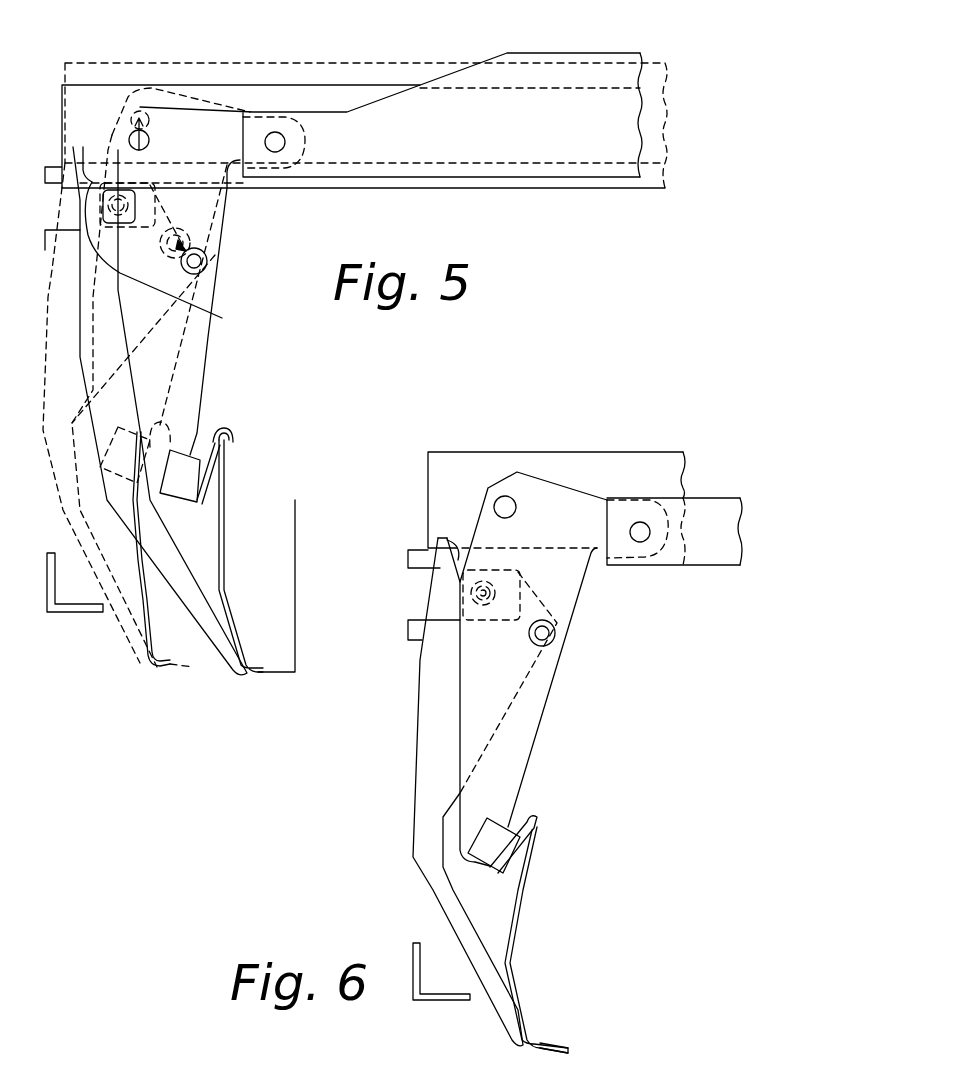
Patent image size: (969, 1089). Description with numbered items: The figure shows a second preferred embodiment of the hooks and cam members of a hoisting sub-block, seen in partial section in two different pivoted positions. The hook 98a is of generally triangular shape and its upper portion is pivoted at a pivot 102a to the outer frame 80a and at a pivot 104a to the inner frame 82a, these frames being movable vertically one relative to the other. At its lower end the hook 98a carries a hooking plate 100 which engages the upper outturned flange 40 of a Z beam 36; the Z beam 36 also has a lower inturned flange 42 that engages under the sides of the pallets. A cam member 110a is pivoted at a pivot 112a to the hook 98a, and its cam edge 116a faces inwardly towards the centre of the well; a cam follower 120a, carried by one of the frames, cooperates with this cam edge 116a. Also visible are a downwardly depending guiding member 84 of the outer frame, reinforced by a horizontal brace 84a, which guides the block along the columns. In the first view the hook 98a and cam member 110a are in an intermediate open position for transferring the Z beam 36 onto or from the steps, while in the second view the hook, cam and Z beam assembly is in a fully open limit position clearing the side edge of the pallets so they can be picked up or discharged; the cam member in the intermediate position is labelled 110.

In FIG. 5, the Z beam 36 is at (227, 552).
In FIG. 6, the Z beam 36 is at (520, 925).
In FIG. 6, the upper outturned flange 40 is at (532, 816).
In FIG. 5, the lower inturned flange 42 is at (193, 667).
In FIG. 6, the lower inturned flange 42 is at (560, 1045).
In FIG. 5, the outer frame 80a is at (546, 65).
In FIG. 6, the outer frame 80a is at (710, 558).
In FIG. 5, the inner frame 82a is at (316, 88).
In FIG. 6, the inner frame 82a is at (638, 466).
In FIG. 5, the guiding member 84 is at (70, 614).
In FIG. 6, the horizontal brace 84a is at (435, 998).
In FIG. 5, the hook 98a is at (208, 365).
In FIG. 6, the hook 98a is at (530, 727).
In FIG. 6, the hooking plate 100 is at (525, 845).
In FIG. 5, the pivot 102a is at (286, 142).
In FIG. 6, the pivot 102a is at (641, 522).
In FIG. 5, the pivot 104a is at (147, 136).
In FIG. 6, the pivot 104a is at (512, 498).
In FIG. 5, the actuating arm 110 is at (205, 620).
In FIG. 6, the cam member 110a is at (433, 728).
In FIG. 6, the pivot 112a is at (556, 636).
In FIG. 6, the cam edge 116a is at (445, 535).
In FIG. 5, the cam follower 120a is at (183, 262).
In FIG. 6, the cam follower 120a is at (432, 636).